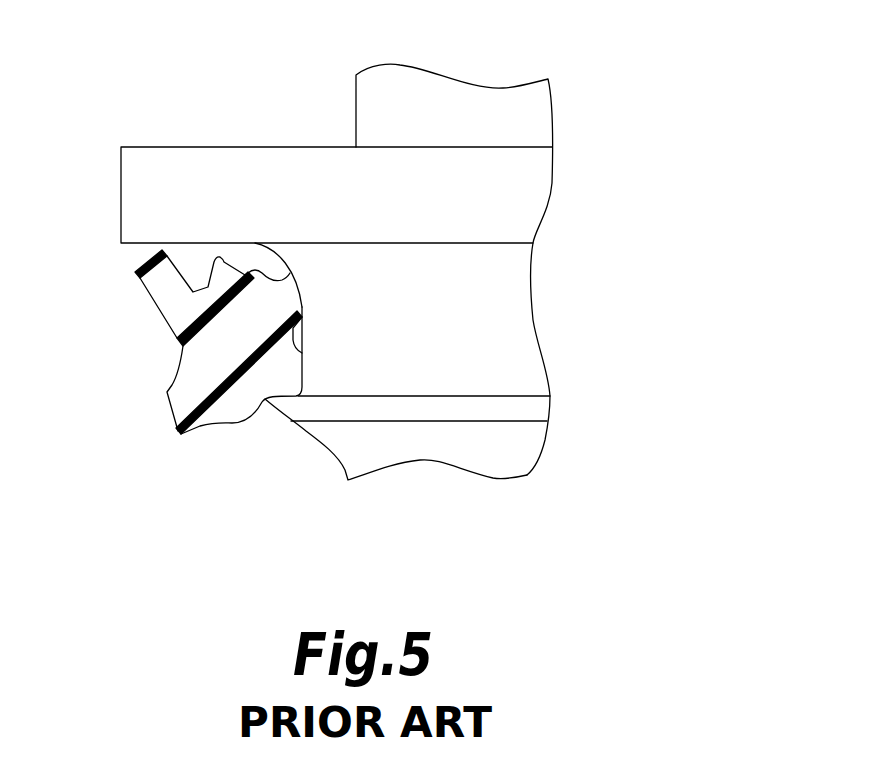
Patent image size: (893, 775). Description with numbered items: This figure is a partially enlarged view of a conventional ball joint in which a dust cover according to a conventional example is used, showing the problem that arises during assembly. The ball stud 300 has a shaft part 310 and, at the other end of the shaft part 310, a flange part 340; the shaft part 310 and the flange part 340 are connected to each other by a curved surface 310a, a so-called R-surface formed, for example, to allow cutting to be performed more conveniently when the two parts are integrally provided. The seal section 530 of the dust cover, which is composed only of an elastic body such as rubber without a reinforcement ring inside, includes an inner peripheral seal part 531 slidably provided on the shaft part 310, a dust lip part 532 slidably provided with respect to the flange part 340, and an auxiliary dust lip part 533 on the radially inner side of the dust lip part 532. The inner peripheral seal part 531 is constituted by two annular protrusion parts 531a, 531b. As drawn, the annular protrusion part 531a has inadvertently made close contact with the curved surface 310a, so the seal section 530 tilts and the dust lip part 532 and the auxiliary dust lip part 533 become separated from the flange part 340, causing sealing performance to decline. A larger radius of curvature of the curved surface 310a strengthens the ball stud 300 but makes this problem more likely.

The ball stud 300 is at (314, 80).
The shaft part 310 is at (480, 460).
The curved surface 310a is at (276, 256).
The flange part 340 is at (175, 163).
The seal section 530 is at (123, 411).
The inner peripheral seal part 531 is at (341, 329).
The annular protrusion part 531a is at (298, 290).
The annular protrusion part 531b is at (302, 362).
The dust lip part 532 is at (152, 283).
The auxiliary dust lip part 533 is at (218, 257).